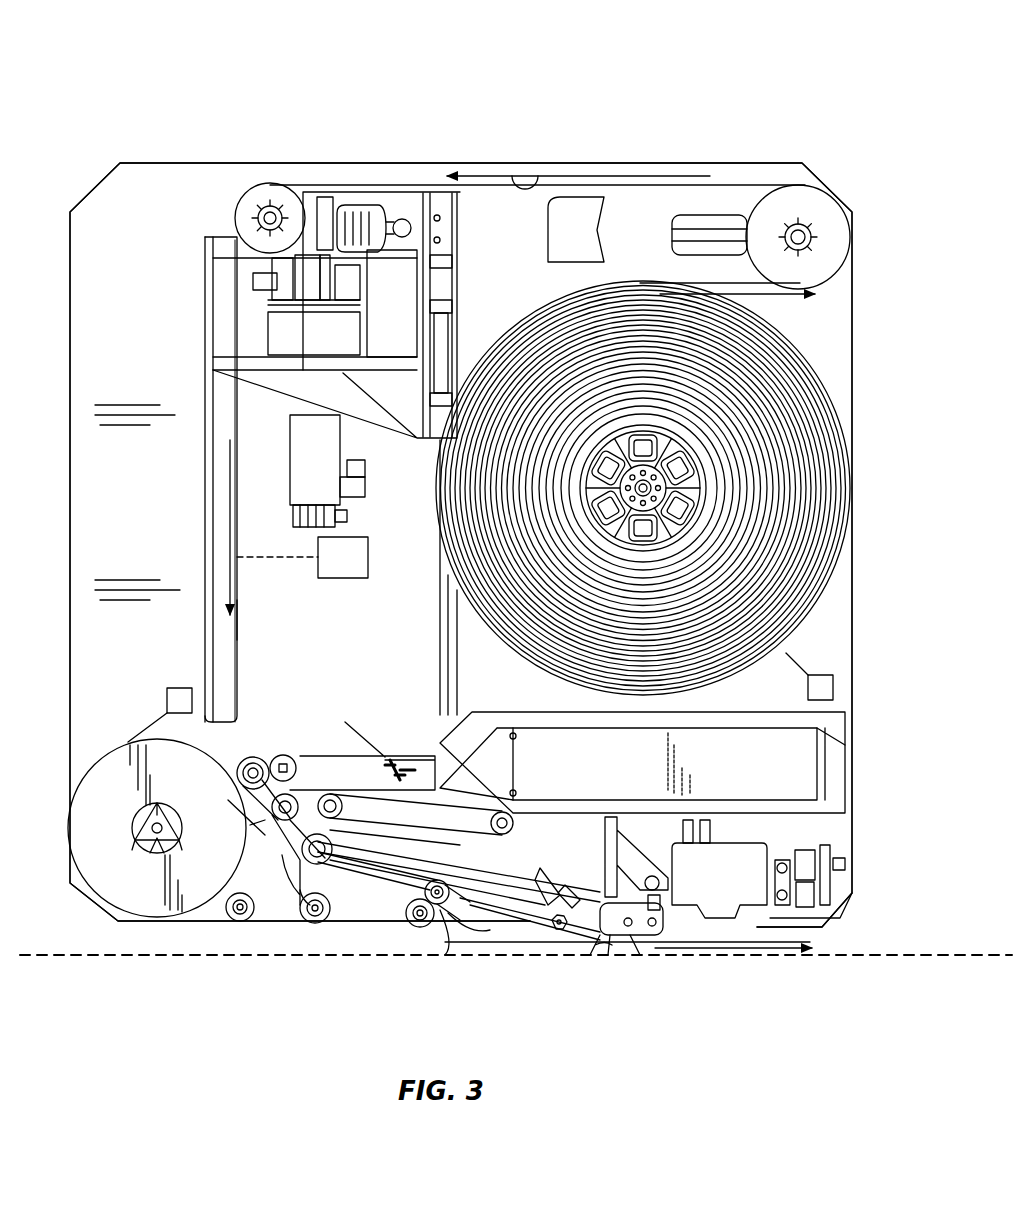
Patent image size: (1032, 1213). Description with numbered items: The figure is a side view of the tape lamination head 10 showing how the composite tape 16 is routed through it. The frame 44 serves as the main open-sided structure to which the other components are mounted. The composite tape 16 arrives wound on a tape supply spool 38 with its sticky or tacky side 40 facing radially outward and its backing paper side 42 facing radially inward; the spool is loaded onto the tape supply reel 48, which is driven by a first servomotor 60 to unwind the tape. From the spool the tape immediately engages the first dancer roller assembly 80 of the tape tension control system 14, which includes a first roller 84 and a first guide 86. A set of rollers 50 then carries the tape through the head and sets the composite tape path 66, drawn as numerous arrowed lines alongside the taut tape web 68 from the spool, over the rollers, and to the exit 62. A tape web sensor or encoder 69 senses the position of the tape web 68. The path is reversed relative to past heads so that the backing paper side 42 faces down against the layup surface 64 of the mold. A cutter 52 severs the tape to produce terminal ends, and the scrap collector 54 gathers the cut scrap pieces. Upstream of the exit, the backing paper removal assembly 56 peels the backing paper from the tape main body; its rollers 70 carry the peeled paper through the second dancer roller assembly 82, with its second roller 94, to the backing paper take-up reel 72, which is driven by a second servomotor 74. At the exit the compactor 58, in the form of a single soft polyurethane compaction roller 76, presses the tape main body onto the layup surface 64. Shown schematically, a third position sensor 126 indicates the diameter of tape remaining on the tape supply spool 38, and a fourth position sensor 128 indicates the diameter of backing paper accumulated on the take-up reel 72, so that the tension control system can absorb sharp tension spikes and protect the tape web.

The tape lamination head 10 is at (872, 125).
The tape tension control system 14 is at (735, 205).
The composite tape 16 is at (378, 185).
The tape supply spool 38 is at (833, 385).
The sticky or tacky side 40 is at (240, 626).
The backing paper side 42 is at (235, 653).
The frame 44 is at (95, 163).
The tape supply reel 48 is at (722, 488).
The rollers 50 is at (250, 195).
The cutter 52 is at (265, 320).
The scrap collector 54 is at (752, 765).
The backing paper removal assembly 56 is at (415, 935).
The compactor 58 is at (628, 948).
The first servomotor 60 is at (655, 520).
The exit 62 is at (612, 938).
The layup surface 64 is at (515, 942).
The composite tape path 66 is at (622, 178).
The tape web 68 is at (228, 448).
The tape web sensor or encoder 69 is at (302, 557).
The rollers 70 is at (240, 922).
The backing paper take-up reel 72 is at (115, 752).
The second servomotor 74 is at (140, 825).
The compaction roller 76 is at (642, 942).
The first dancer roller assembly 80 is at (858, 240).
The second dancer roller assembly 82 is at (275, 856).
The first roller 84 is at (820, 205).
The first guide 86 is at (700, 228).
The second roller 94 is at (330, 800).
The third position sensor 126 is at (835, 688).
The fourth position sensor 128 is at (165, 700).